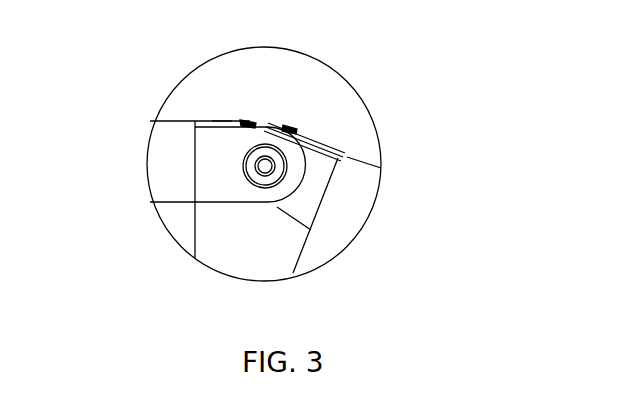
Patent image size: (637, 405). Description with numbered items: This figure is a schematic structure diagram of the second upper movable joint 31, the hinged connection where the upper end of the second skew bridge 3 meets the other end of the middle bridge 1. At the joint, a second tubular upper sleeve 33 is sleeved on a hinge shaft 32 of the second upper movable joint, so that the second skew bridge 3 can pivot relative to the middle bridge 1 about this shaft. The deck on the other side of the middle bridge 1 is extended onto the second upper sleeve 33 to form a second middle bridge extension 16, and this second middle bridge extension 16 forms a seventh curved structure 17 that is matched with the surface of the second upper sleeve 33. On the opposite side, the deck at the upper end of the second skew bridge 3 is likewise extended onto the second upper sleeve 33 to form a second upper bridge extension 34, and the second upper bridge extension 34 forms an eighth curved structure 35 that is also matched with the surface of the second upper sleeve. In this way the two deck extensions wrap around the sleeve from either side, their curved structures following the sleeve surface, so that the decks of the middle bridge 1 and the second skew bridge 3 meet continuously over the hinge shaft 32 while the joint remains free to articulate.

The middle bridge 1 is at (170, 172).
The second skew bridge 3 is at (345, 218).
The second middle bridge extension 16 is at (220, 122).
The seventh curved structure 17 is at (249, 120).
The second upper movable joint 31 is at (217, 177).
The hinge shaft 32 is at (258, 173).
The second tubular upper sleeve 33 is at (280, 120).
The second upper bridge extension 34 is at (333, 147).
The eighth curved structure 35 is at (295, 130).